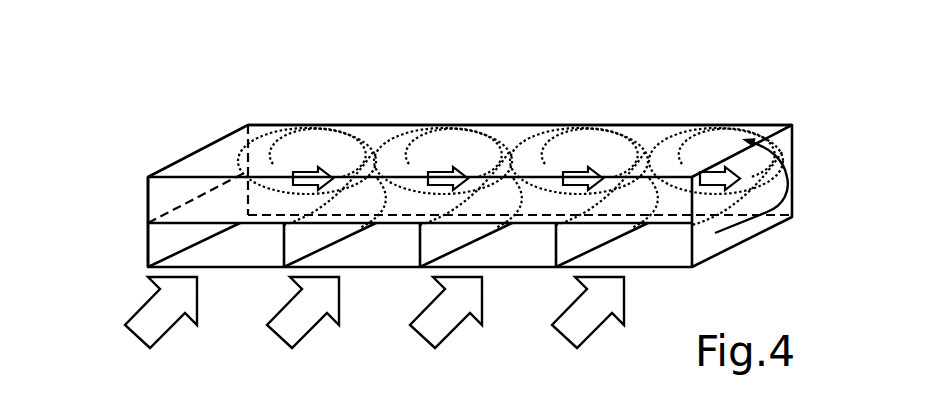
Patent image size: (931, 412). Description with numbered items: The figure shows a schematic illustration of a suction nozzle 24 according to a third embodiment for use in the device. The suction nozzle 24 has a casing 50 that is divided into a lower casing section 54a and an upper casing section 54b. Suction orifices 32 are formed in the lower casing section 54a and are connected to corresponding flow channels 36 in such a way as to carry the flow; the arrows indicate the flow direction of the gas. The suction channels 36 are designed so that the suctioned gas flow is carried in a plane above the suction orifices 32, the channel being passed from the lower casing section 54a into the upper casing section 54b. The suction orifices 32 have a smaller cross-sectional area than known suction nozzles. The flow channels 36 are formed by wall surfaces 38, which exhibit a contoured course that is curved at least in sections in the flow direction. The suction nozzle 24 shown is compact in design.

The suction nozzle 24 is at (200, 79).
The suction orifices 32 is at (267, 266).
The flow channels 36 is at (250, 258).
The wall surfaces 38 is at (306, 136).
The casing 50 is at (378, 127).
The lower casing section 54a is at (147, 252).
The upper casing section 54b is at (147, 202).